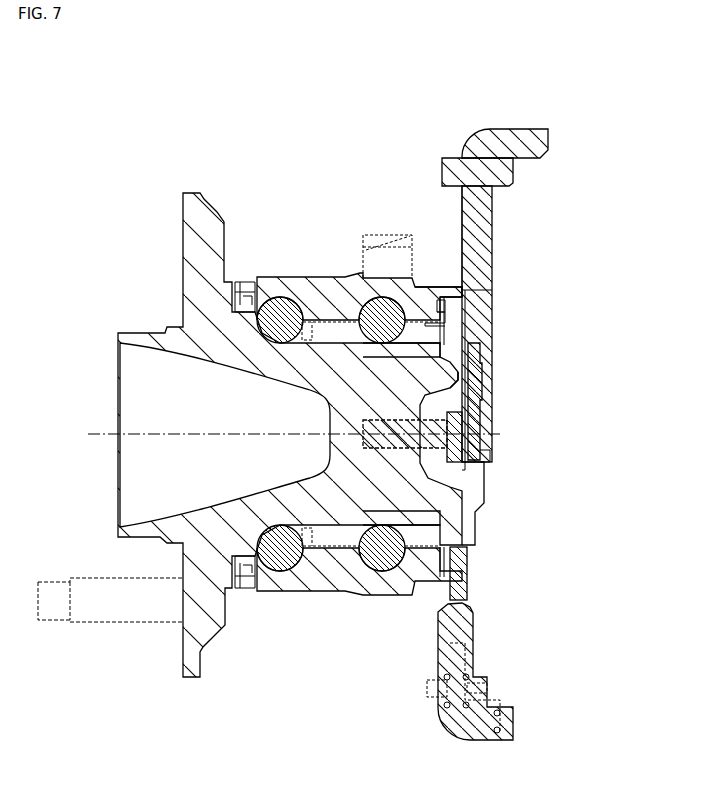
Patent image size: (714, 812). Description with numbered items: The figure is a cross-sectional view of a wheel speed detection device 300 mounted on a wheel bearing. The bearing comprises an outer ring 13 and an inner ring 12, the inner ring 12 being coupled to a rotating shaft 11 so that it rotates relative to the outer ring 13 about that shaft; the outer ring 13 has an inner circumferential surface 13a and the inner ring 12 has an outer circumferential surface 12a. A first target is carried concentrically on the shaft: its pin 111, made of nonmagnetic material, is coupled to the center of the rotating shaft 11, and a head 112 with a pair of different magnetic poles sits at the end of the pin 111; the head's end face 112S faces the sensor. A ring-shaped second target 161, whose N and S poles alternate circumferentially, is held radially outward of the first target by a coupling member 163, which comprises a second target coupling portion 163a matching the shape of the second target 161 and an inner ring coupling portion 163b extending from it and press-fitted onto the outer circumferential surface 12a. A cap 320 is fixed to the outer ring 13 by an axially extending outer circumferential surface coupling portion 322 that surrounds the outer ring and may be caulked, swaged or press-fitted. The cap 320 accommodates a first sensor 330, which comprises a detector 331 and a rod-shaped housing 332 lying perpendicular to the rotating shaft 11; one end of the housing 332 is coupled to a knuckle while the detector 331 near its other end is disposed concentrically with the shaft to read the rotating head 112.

The wheel speed detection device 300 is at (192, 112).
The rotating shaft 11 is at (337, 505).
The pin 111 is at (465, 478).
The head 112 is at (470, 400).
The end surface of hub end portion 112S is at (455, 392).
The inner ring 12 is at (434, 343).
The outer circumferential surface of the inner ring 12a is at (410, 295).
The outer ring 13 is at (313, 280).
The inner circumferential surface of the outer ring 13a is at (420, 292).
The second target 161 is at (443, 293).
The coupling member 163 is at (575, 288).
The second target coupling portion 163a is at (442, 306).
The inner ring coupling portion 163b is at (442, 318).
The cap 320 is at (478, 530).
The outer circumferential surface coupling portion 322 is at (466, 287).
The first sensor 330 is at (493, 424).
The detector 331 is at (482, 445).
The rod-shaped housing 332 is at (485, 455).